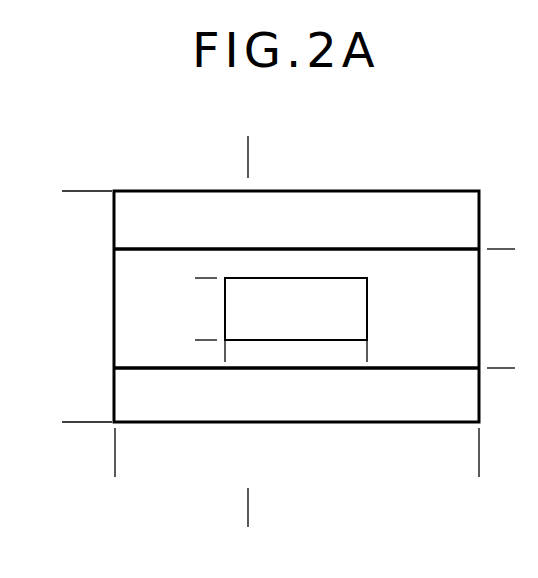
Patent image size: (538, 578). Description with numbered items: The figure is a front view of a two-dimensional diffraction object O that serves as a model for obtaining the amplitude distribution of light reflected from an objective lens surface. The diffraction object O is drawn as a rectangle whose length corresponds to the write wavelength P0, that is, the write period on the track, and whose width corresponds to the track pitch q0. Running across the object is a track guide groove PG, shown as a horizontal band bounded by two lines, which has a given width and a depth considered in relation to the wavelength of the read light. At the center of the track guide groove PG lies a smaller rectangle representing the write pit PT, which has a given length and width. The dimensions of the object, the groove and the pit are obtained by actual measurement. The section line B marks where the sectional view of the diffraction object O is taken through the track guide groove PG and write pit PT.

The two-dimensional diffraction object O is at (441, 153).
The write pit PT is at (312, 288).
The track guide groove PG is at (397, 263).
The track pitch q0 is at (68, 191).
The write wavelength P0 is at (479, 471).
The section line B— B is at (248, 136).